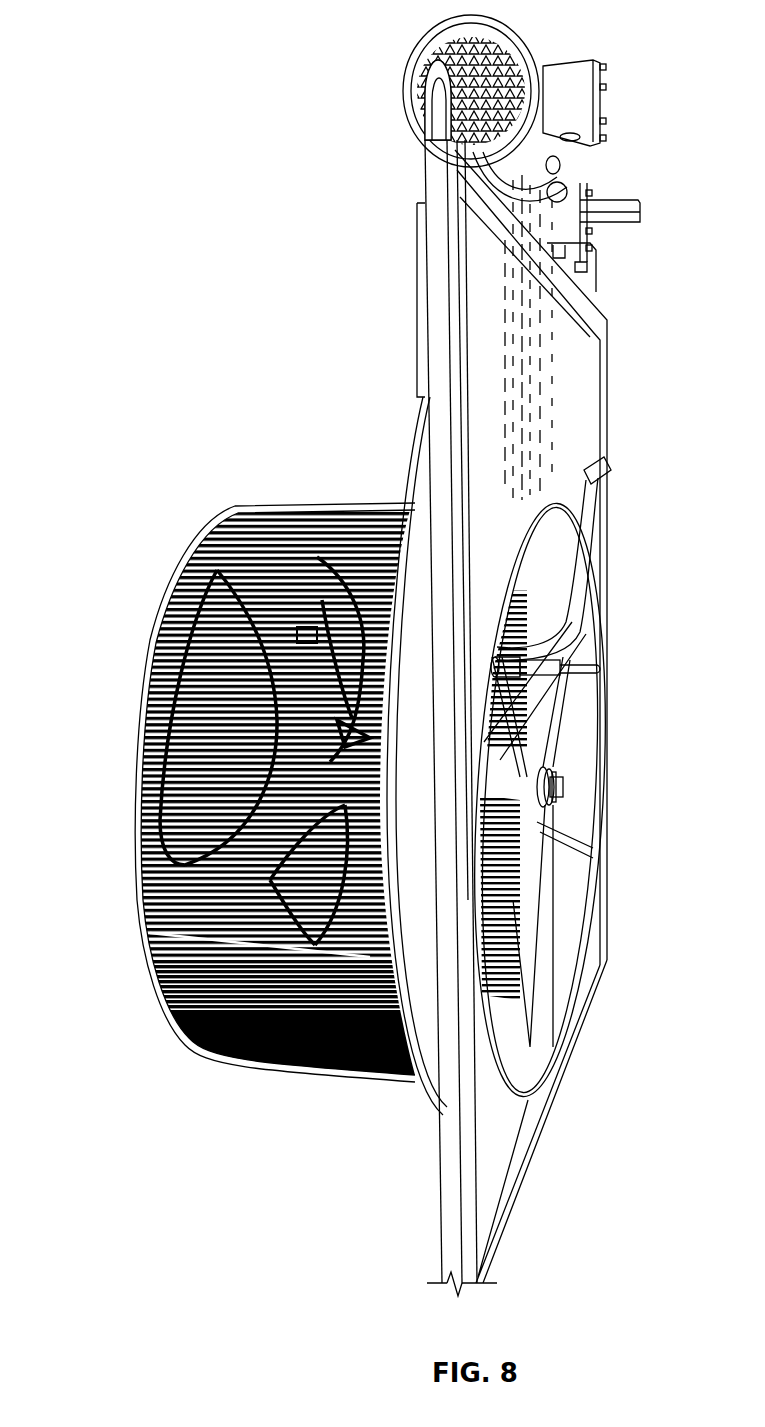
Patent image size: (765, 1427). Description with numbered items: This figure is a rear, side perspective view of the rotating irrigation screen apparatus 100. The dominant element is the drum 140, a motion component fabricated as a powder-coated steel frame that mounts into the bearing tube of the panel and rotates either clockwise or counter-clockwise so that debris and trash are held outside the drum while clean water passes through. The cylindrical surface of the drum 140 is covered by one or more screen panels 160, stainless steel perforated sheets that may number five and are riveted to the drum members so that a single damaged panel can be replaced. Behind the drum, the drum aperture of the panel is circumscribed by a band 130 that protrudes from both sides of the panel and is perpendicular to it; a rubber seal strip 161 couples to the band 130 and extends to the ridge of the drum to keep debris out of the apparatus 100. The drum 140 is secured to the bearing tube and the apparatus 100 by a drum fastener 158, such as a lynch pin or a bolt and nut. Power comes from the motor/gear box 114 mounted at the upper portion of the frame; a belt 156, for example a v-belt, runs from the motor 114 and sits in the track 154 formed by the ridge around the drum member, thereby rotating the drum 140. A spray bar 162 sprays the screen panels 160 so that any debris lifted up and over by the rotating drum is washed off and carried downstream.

The rotating irrigation screen apparatus 100 is at (303, 48).
The motor/gear box 114 is at (545, 62).
The band 130 is at (567, 992).
The drum 140 is at (150, 697).
The track 154 is at (407, 577).
The belt 156 is at (425, 727).
The drum fastener 158 is at (567, 808).
The screen panels 160 is at (287, 528).
The seal strip 161 is at (197, 591).
The spray bar 162 is at (590, 502).